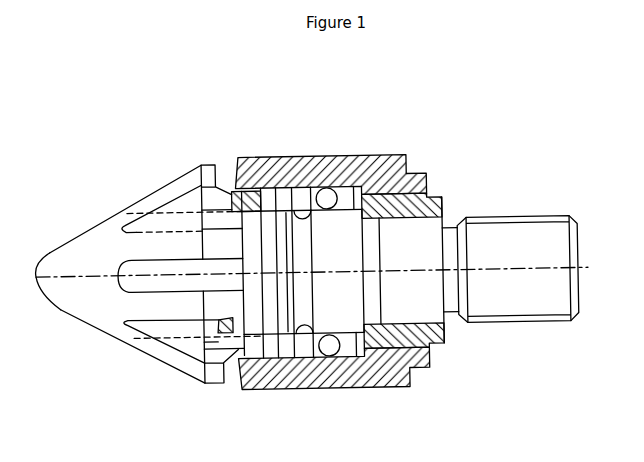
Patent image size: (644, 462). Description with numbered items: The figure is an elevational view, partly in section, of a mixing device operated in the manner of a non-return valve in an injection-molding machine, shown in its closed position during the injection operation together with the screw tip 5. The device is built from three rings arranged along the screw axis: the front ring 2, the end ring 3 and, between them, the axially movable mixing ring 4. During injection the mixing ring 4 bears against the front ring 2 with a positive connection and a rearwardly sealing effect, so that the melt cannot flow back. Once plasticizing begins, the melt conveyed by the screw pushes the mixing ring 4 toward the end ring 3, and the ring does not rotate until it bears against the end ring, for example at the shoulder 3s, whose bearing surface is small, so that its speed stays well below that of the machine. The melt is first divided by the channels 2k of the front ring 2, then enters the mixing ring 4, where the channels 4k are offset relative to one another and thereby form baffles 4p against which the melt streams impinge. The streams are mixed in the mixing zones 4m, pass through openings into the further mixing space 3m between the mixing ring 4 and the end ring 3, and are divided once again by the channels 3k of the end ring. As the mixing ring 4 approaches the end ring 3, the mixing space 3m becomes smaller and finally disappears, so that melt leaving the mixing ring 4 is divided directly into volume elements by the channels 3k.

The front ring 2 is at (430, 179).
The channel in the front ring 2k is at (376, 196).
The end ring 3 is at (256, 192).
The channel in the end ring 3k is at (244, 215).
The mixing space between end ring and mixing ring 3m is at (277, 347).
The shoulder 3s is at (232, 247).
The mixing ring 4 is at (313, 164).
The channel in the mixing ring 4k is at (277, 347).
The mixing space in the mixing ring 4m is at (323, 207).
The baffle 4p is at (300, 344).
The screw tip 5 is at (80, 296).